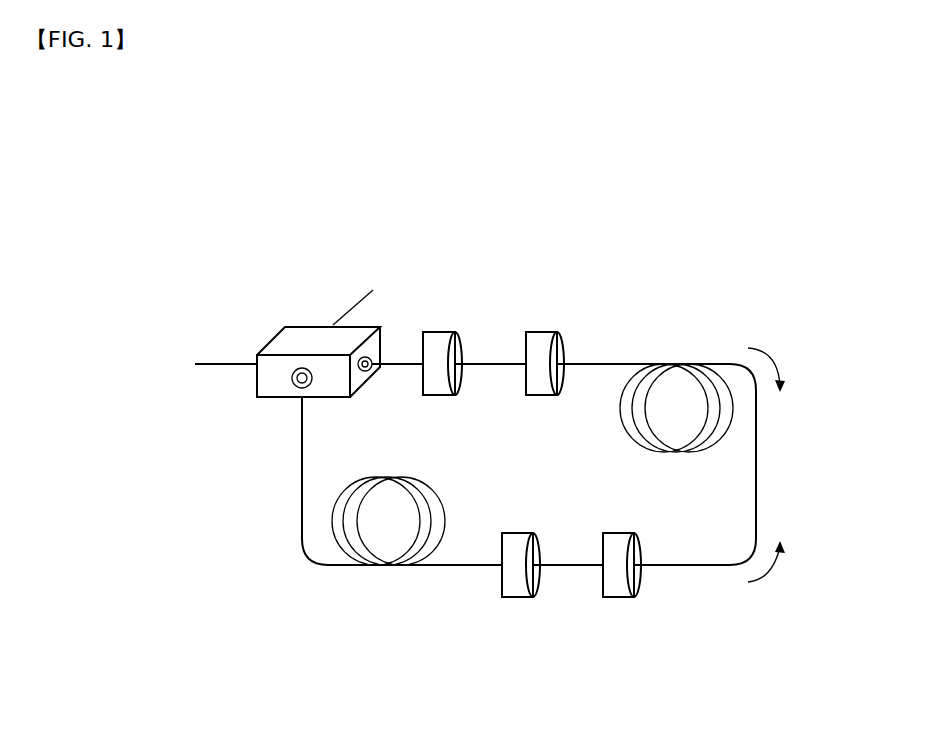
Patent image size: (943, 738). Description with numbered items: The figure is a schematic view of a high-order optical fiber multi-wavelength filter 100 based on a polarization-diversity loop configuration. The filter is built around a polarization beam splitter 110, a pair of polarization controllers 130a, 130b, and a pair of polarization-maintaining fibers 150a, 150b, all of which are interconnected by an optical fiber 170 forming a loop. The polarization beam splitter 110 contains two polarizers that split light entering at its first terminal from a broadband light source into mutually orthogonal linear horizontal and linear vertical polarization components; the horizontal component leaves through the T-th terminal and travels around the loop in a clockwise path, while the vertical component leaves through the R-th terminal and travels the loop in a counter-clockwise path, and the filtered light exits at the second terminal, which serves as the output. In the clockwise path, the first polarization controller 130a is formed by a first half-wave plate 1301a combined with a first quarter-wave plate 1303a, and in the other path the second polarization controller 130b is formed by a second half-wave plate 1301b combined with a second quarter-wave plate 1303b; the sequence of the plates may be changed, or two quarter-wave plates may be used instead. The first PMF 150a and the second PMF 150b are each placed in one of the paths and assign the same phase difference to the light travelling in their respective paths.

The high-order optical fiber multi-wavelength filter 100 is at (175, 157).
The polarization beam splitter 110 is at (303, 325).
The first polarization controller 130a is at (555, 272).
The first half-wave plate 1301a is at (442, 332).
The first quarter-wave plate 1303a is at (545, 332).
The first PMF 150a is at (683, 375).
The optical fiber 170 is at (302, 488).
The second PMF 150b is at (400, 552).
The second polarization controller 130b is at (633, 656).
The second quarter-wave plate 1303b is at (520, 597).
The second half-wave plate 1301b is at (622, 597).